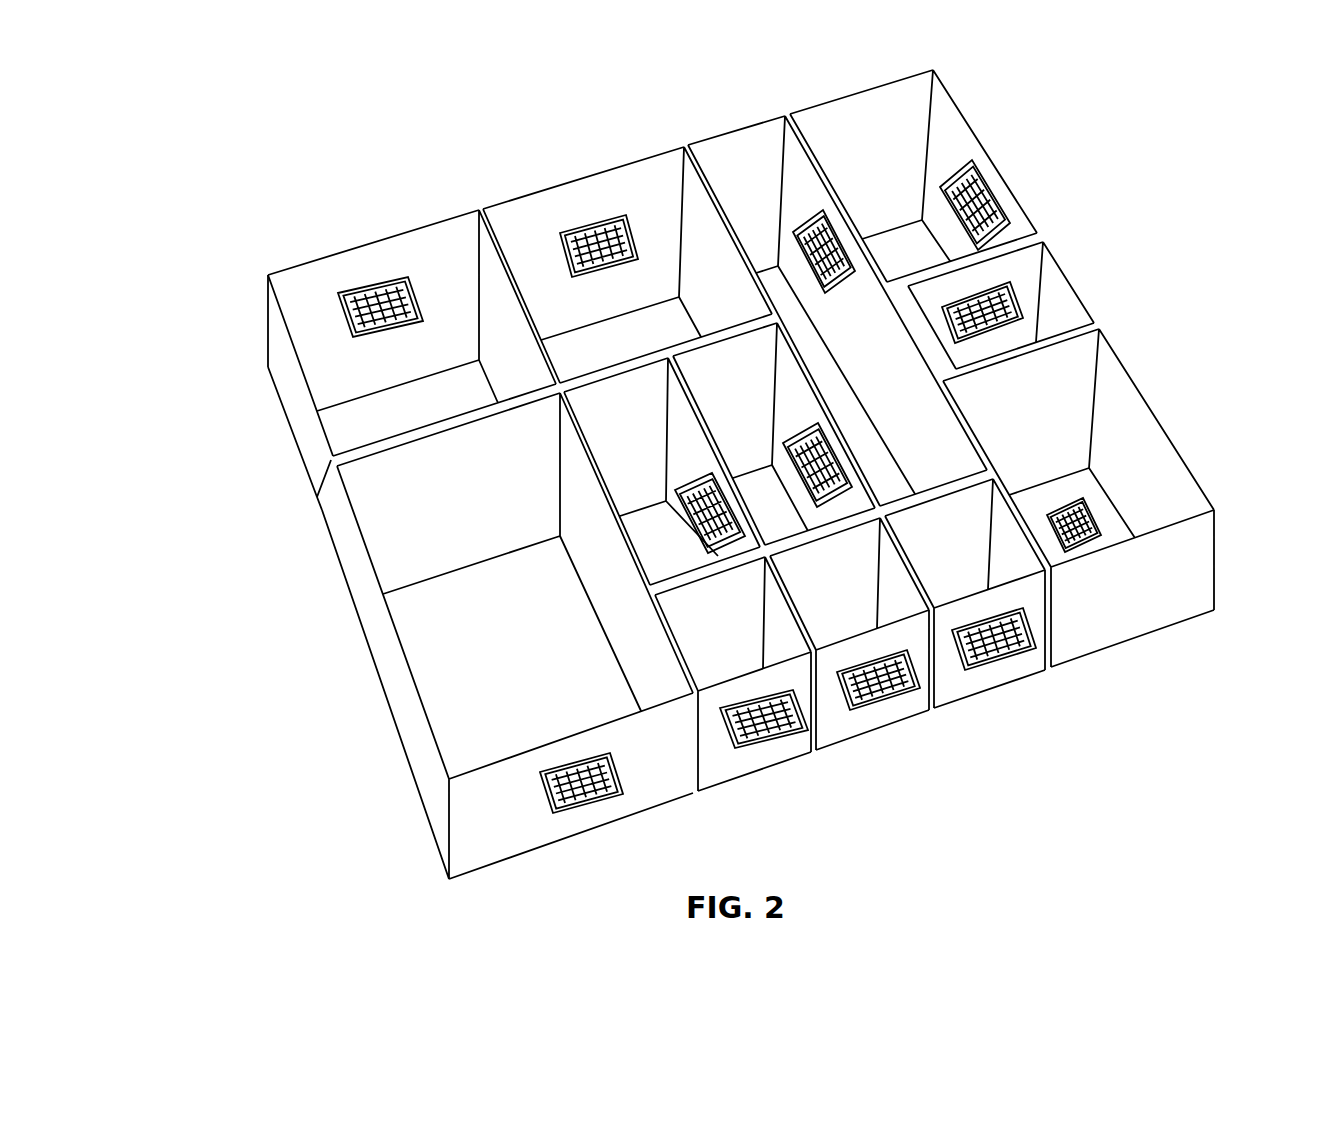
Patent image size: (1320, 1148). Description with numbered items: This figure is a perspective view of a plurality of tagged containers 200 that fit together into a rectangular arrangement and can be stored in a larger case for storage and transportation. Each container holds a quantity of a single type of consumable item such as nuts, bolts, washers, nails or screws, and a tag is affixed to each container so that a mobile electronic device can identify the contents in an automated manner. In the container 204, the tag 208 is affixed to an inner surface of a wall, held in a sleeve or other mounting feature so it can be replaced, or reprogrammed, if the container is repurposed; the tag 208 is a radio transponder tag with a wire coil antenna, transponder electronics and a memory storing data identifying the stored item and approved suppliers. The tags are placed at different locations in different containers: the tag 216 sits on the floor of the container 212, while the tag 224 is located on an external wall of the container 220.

The plurality of tagged containers 200 is at (233, 166).
The container 204 is at (410, 222).
The tag 208 is at (368, 333).
The container 212 is at (1170, 445).
The tag 216 is at (1092, 515).
The container 220 is at (958, 705).
The tag 224 is at (1000, 661).